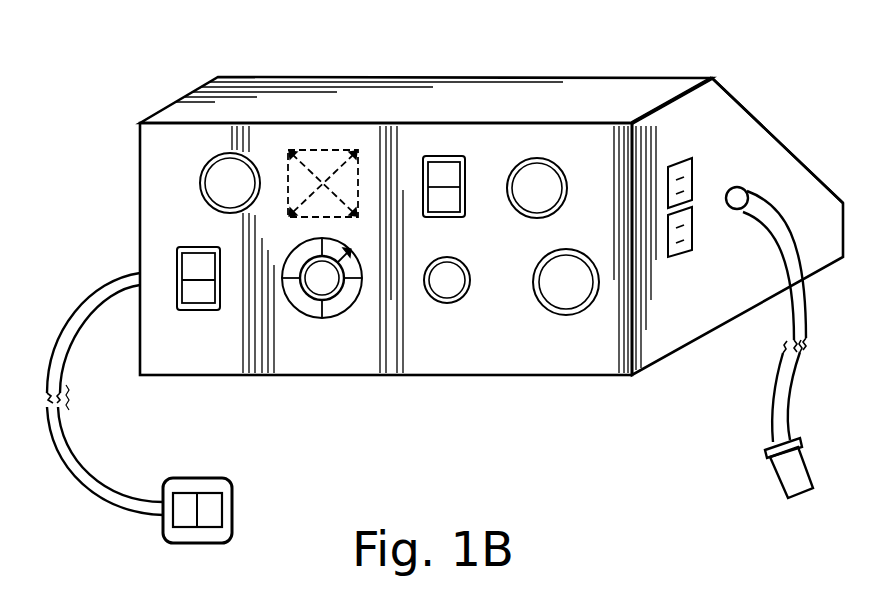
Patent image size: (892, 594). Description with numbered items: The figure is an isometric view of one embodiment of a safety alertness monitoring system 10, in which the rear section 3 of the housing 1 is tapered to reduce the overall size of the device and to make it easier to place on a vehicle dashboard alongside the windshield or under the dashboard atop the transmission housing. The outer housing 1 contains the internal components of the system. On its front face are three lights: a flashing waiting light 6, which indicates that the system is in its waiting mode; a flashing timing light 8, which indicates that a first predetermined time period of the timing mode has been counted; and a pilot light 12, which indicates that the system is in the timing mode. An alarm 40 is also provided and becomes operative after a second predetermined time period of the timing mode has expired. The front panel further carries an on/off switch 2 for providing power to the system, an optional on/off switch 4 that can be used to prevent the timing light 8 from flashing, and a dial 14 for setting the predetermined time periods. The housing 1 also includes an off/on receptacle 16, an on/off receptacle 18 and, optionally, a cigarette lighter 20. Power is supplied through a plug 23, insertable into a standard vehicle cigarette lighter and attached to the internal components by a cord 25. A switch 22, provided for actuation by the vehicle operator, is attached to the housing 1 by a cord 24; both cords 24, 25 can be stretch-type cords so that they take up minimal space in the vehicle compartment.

The outer housing 1 is at (665, 338).
The on/off switch 2 is at (205, 310).
The rear section 3 is at (772, 128).
The optional on/off switch 4 is at (438, 156).
The flashing waiting light 6 is at (238, 153).
The flashing timing light 8 is at (547, 158).
The safety alertness monitoring system 10 is at (515, 58).
The pilot light 12 is at (452, 304).
The dial 14 is at (337, 303).
The off/on receptacle 16 is at (670, 160).
The on/off receptacle 18 is at (674, 258).
The cigarette lighter 20 is at (563, 316).
The switch 22 is at (233, 508).
The plug 23 is at (805, 458).
The cord 24 is at (77, 330).
The cord 25 is at (812, 300).
The alarm 40 is at (328, 150).